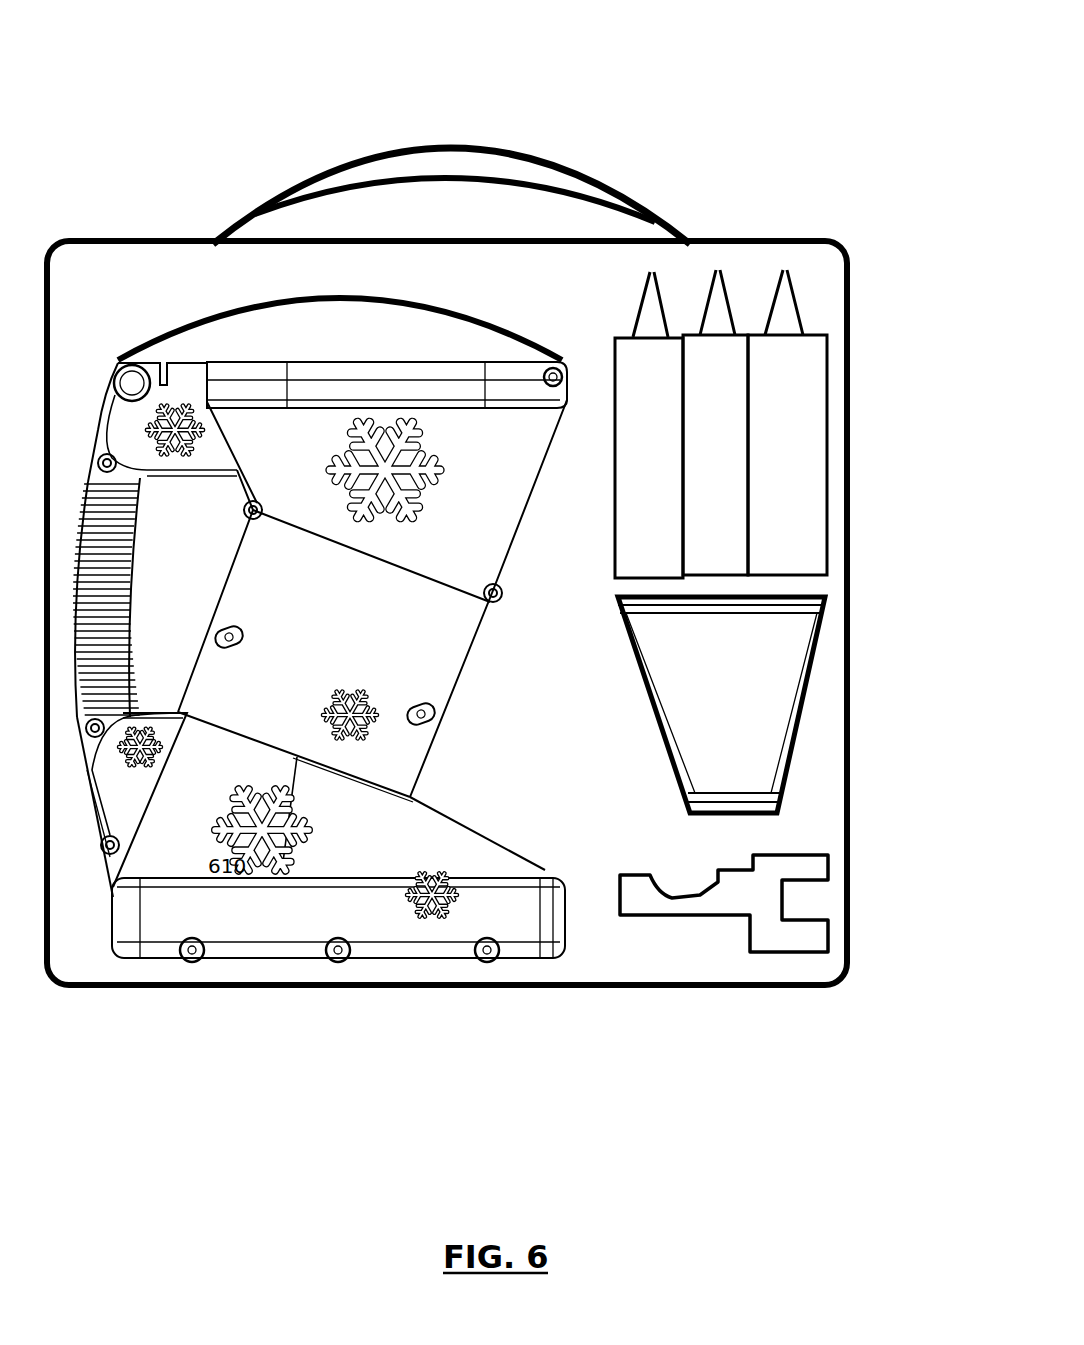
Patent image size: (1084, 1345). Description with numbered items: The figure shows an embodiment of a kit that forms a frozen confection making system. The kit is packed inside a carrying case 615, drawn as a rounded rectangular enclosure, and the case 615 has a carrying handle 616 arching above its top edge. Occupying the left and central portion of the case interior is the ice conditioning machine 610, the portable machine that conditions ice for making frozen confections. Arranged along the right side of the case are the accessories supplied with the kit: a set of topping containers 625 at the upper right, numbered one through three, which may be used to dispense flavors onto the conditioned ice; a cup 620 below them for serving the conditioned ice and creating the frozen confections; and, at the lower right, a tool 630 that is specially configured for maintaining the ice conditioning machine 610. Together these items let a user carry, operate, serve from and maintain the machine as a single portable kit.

The ice conditioning machine 610 is at (233, 922).
The carrying case 615 is at (516, 987).
The carrying handle 616 is at (495, 165).
The cup 620 is at (757, 697).
The topping container 625 is at (790, 390).
The tool 630 is at (795, 870).